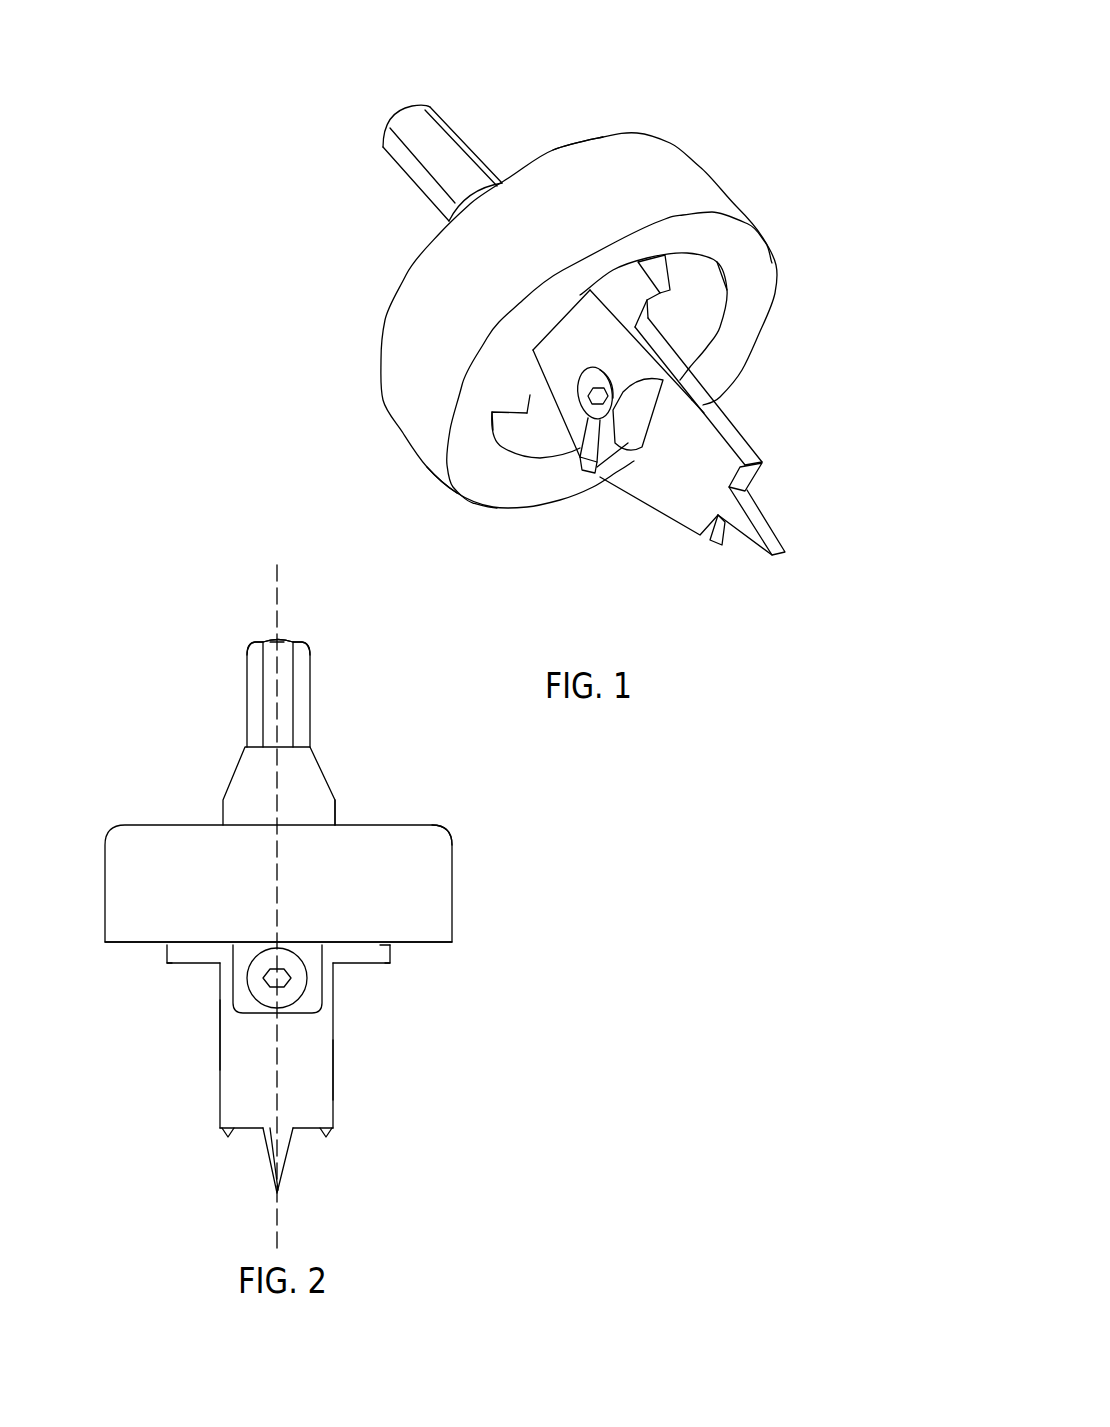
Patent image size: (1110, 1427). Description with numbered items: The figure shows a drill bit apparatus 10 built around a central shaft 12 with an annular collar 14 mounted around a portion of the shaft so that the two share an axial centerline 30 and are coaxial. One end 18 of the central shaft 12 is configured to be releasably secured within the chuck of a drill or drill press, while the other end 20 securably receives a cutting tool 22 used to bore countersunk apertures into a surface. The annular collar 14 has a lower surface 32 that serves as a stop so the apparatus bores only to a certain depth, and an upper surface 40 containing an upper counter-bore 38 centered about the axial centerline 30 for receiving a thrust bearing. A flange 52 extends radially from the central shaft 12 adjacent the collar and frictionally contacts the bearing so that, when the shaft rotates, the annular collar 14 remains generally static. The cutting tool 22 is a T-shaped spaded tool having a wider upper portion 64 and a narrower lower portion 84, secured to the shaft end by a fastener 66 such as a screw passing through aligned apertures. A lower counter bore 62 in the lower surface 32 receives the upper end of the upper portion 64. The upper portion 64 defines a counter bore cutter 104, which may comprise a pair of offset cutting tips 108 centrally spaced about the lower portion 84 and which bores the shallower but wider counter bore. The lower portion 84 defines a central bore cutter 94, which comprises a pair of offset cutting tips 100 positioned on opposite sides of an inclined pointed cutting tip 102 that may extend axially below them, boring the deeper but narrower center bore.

In FIG. 1, the drill bit apparatus 10 is at (397, 233).
In FIG. 2, the drill bit apparatus 10 is at (210, 750).
In FIG. 1, the central shaft 12 is at (473, 143).
In FIG. 2, the central shaft 12 is at (310, 697).
In FIG. 1, the annular collar 14 is at (560, 150).
In FIG. 2, the annular collar 14 is at (453, 893).
In FIG. 1, the one end of the central shaft 18 is at (405, 110).
In FIG. 2, the one end of the central shaft 18 is at (265, 640).
In FIG. 1, the other end of the central shaft 20 is at (735, 365).
In FIG. 2, the other end of the central shaft 20 is at (267, 1013).
In FIG. 1, the cutting tool 22 is at (710, 413).
In FIG. 2, the cutting tool 22 is at (233, 1033).
In FIG. 2, the axial centerline 30 is at (277, 638).
In FIG. 1, the lower surface 32 is at (483, 467).
In FIG. 2, the lower surface 32 is at (120, 943).
In FIG. 2, the upper counter-bore 38 is at (335, 823).
In FIG. 1, the upper surface 40 is at (628, 133).
In FIG. 2, the upper surface 40 is at (422, 823).
In FIG. 2, the flange 52 is at (327, 770).
In FIG. 1, the lower counter bore 62 is at (727, 323).
In FIG. 2, the lower counter bore 62 is at (143, 947).
In FIG. 1, the upper portion 64 is at (540, 432).
In FIG. 2, the upper portion 64 is at (357, 963).
In FIG. 1, the fastener 66 is at (600, 417).
In FIG. 2, the fastener 66 is at (250, 990).
In FIG. 1, the lower portion 84 is at (710, 447).
In FIG. 2, the lower portion 84 is at (333, 1073).
In FIG. 1, the central bore cutter 94 is at (690, 500).
In FIG. 2, the central bore cutter 94 is at (333, 1105).
In FIG. 1, the offset cutting tips 100 is at (755, 464).
In FIG. 2, the offset cutting tips 100 is at (232, 1132).
In FIG. 1, the pointed cutting tip 102 is at (760, 520).
In FIG. 2, the pointed cutting tip 102 is at (273, 1180).
In FIG. 1, the counter bore cutter 104 is at (563, 417).
In FIG. 2, the counter bore cutter 104 is at (392, 953).
In FIG. 1, the offset cutting tips 108 is at (683, 305).
In FIG. 2, the offset cutting tips 108 is at (177, 963).